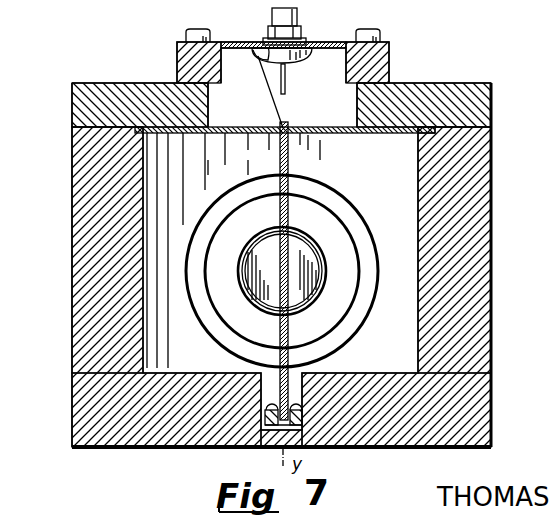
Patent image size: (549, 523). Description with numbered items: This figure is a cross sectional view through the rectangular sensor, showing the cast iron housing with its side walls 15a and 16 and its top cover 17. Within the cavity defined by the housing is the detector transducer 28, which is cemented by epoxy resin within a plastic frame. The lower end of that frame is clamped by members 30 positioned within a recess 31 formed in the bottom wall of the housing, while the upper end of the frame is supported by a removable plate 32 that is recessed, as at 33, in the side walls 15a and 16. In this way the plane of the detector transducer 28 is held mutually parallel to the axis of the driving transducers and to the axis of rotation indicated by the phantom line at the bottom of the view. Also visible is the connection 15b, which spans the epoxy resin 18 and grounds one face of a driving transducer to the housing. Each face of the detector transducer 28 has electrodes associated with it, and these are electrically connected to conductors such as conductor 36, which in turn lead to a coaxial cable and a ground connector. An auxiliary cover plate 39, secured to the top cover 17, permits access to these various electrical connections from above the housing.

The side wall 16 is at (72, 231).
The side wall 15a is at (491, 232).
The top cover 17 is at (109, 83).
The removable plate 32 is at (358, 131).
The recess 33 is at (432, 134).
The auxiliary cover plate 39 is at (390, 63).
The conductor 36 is at (282, 110).
The recess 31 is at (296, 376).
The connection 15b is at (304, 250).
The epoxy resin 18 is at (312, 300).
The detector transducer 28 is at (281, 331).
The clamping members 30 is at (270, 417).